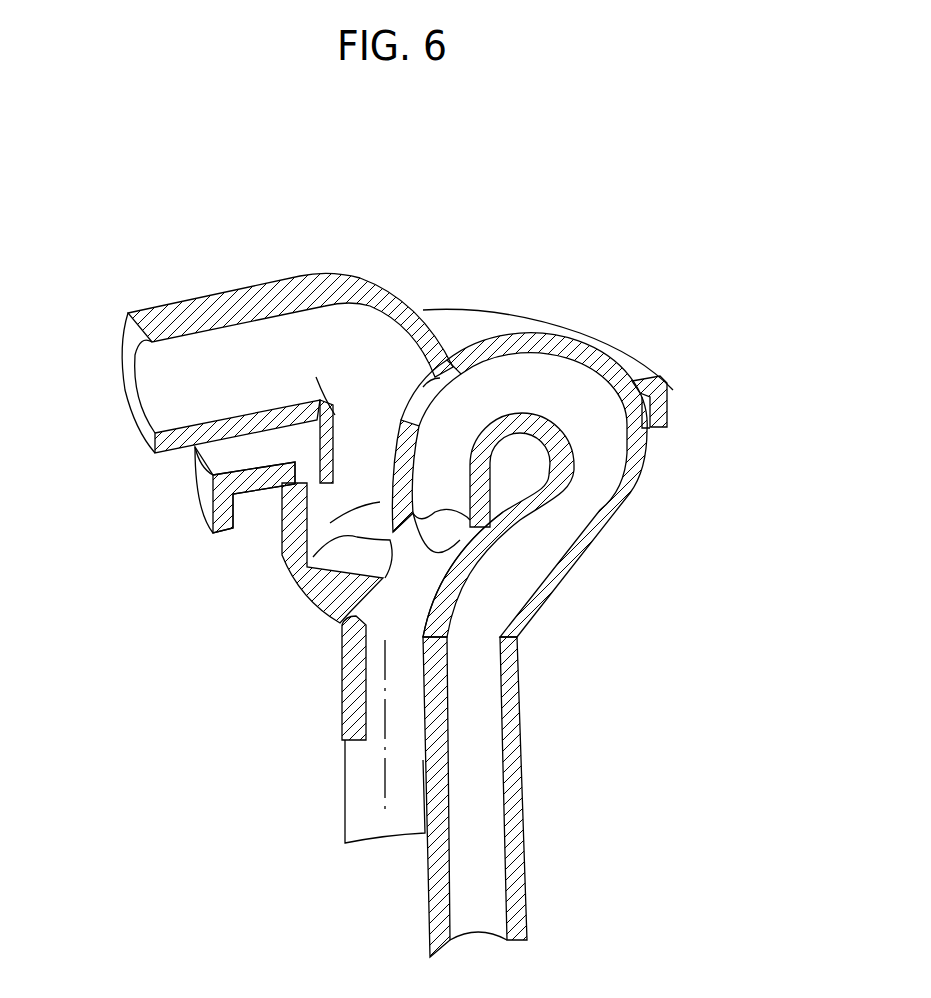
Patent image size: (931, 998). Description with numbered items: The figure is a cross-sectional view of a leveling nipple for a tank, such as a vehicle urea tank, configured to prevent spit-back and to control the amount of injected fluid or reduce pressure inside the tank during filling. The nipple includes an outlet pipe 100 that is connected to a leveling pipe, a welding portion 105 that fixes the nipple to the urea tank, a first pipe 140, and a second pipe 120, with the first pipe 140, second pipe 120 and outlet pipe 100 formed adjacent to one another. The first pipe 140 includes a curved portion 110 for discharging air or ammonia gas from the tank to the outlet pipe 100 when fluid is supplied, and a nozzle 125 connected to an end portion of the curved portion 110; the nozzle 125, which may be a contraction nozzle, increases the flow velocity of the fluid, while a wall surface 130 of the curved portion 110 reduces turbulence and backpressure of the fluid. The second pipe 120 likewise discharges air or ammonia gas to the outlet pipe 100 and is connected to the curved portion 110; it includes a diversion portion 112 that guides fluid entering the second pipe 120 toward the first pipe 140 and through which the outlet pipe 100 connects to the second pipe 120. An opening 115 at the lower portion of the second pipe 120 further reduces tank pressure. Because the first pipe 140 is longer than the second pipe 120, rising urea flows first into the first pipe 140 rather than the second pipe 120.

The outlet pipe 100 is at (150, 390).
The welding portion 105 is at (662, 428).
The curved portion 110 is at (557, 380).
The diversion portion 112 is at (330, 562).
The opening 115 is at (352, 757).
The second pipe 120 is at (403, 688).
The nozzle 125 is at (470, 482).
The wall surface 130 is at (470, 557).
The first pipe 140 is at (483, 795).